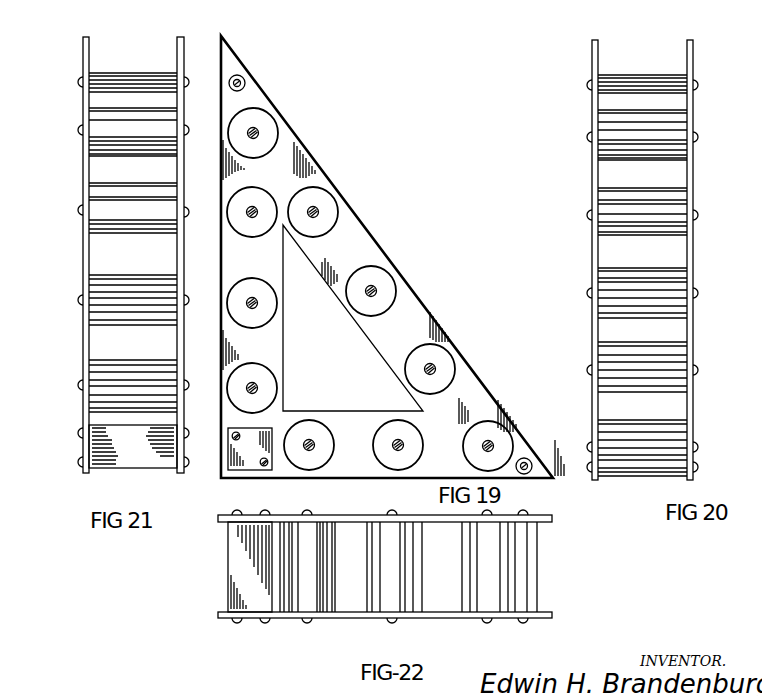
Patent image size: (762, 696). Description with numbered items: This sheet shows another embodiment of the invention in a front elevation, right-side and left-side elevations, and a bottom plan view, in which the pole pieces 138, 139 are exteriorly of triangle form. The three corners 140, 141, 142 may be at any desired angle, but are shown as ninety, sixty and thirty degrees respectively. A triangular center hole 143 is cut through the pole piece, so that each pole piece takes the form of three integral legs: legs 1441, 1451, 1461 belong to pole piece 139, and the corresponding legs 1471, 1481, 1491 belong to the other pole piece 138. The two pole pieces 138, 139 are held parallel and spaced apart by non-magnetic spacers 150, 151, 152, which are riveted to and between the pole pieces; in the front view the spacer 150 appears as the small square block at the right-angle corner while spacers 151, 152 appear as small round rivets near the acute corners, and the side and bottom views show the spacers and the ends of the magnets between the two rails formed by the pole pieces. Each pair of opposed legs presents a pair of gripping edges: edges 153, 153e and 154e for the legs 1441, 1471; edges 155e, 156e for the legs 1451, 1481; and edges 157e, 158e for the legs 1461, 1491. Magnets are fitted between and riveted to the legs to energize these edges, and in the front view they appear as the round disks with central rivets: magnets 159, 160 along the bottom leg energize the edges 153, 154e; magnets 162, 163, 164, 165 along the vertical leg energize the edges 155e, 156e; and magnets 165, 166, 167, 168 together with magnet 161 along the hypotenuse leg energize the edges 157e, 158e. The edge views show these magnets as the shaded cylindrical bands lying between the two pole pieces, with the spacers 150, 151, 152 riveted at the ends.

In FIG. 19, the pole piece 138 is at (383, 254).
In FIG. 21, the pole piece 138 is at (194, 251).
In FIG. 20, the pole piece 138 is at (592, 258).
In FIG. 22, the pole piece 138 is at (552, 518).
In FIG. 21, the pole piece 139 is at (83, 264).
In FIG. 20, the pole piece 139 is at (693, 258).
In FIG. 22, the pole piece 139 is at (546, 618).
In FIG. 19, the corner 140 is at (221, 478).
In FIG. 19, the corner 141 is at (552, 480).
In FIG. 19, the corner 142 is at (221, 36).
In FIG. 19, the triangular center hole 143 is at (353, 318).
In FIG. 19, the leg 1441 is at (357, 472).
In FIG. 21, the leg 1451 is at (176, 184).
In FIG. 19, the leg 1461 is at (340, 211).
In FIG. 20, the leg 1461 is at (592, 186).
In FIG. 22, the leg 1471 is at (432, 620).
In FIG. 21, the leg 1481 is at (84, 346).
In FIG. 20, the leg 1491 is at (693, 172).
In FIG. 19, the non-magnetic spacer 150 is at (259, 470).
In FIG. 21, the non-magnetic spacer 150 is at (160, 469).
In FIG. 22, the non-magnetic spacer 150 is at (239, 575).
In FIG. 19, the non-magnetic spacer 151 is at (244, 78).
In FIG. 21, the non-magnetic spacer 151 is at (130, 52).
In FIG. 20, the non-magnetic spacer 151 is at (620, 78).
In FIG. 19, the non-magnetic spacer 152 is at (522, 457).
In FIG. 20, the non-magnetic spacer 152 is at (689, 464).
In FIG. 22, the non-magnetic spacer 152 is at (537, 556).
In FIG. 22, the gripping edge 153 is at (308, 548).
In FIG. 22, the gripping edge 153e is at (288, 488).
In FIG. 22, the gripping edge 154e is at (292, 620).
In FIG. 21, the gripping edge 155e is at (178, 220).
In FIG. 21, the gripping edge 156e is at (83, 214).
In FIG. 20, the gripping edge 157e is at (592, 228).
In FIG. 20, the gripping edge 158e is at (693, 226).
In FIG. 19, the magnet 159 is at (320, 436).
In FIG. 19, the magnet 160 is at (408, 436).
In FIG. 19, the magnet 161 is at (495, 425).
In FIG. 19, the magnet 162 is at (270, 400).
In FIG. 19, the magnet 163 is at (265, 313).
In FIG. 19, the magnet 164 is at (263, 227).
In FIG. 19, the magnet 165 is at (252, 150).
In FIG. 19, the magnet 166 is at (313, 230).
In FIG. 19, the magnet 167 is at (371, 309).
In FIG. 19, the magnet 168 is at (416, 392).